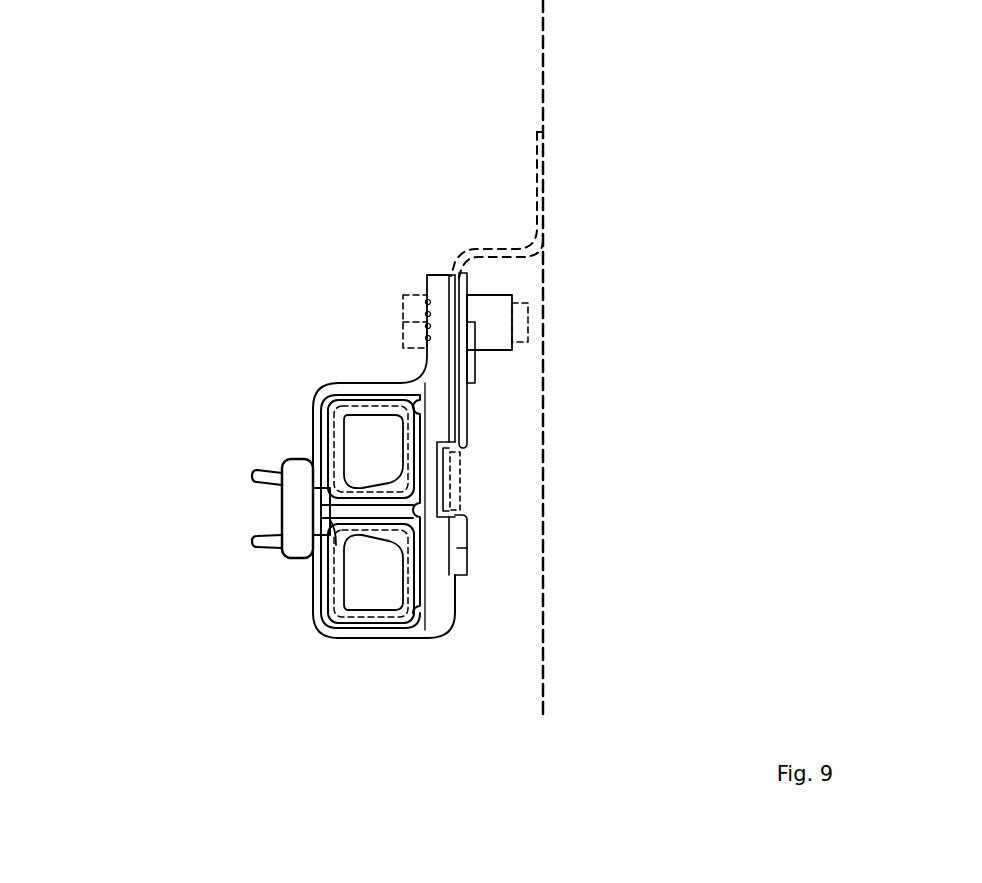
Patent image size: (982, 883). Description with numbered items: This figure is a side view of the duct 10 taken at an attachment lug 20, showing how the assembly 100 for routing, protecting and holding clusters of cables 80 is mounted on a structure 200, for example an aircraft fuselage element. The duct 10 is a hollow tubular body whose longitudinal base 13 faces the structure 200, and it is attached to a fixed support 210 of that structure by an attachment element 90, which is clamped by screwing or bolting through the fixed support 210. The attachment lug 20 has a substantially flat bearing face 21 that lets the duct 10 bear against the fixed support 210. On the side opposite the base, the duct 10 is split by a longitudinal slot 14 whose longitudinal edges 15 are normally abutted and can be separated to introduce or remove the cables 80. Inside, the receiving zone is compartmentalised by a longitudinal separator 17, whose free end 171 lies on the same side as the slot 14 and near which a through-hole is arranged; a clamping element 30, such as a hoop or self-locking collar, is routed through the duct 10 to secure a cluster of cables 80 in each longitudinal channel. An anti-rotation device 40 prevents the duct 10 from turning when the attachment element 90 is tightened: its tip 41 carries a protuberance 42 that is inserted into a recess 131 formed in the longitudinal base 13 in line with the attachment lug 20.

The structure 200 is at (523, 70).
The fixed support 210 is at (496, 247).
The assembly 100 is at (181, 364).
The duct 10 is at (277, 660).
The longitudinal base 13 is at (454, 598).
The longitudinal slot 14 is at (319, 512).
The longitudinal edges 15 is at (319, 499).
The longitudinal separator 17 is at (362, 509).
The free end 171 is at (334, 516).
The attachment lug 20 is at (440, 288).
The bearing face 21 is at (458, 283).
The clamping element 30 is at (345, 417).
The anti-rotation device 40 is at (484, 562).
The tip 41 is at (467, 410).
The protuberance 42 is at (452, 461).
The cluster of cables 80 is at (370, 430).
The attachment element 90 is at (405, 312).
The recess 131 is at (437, 482).